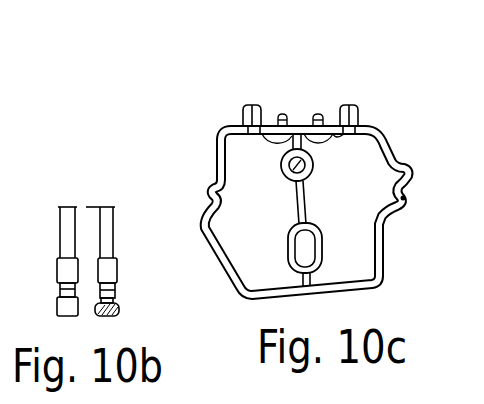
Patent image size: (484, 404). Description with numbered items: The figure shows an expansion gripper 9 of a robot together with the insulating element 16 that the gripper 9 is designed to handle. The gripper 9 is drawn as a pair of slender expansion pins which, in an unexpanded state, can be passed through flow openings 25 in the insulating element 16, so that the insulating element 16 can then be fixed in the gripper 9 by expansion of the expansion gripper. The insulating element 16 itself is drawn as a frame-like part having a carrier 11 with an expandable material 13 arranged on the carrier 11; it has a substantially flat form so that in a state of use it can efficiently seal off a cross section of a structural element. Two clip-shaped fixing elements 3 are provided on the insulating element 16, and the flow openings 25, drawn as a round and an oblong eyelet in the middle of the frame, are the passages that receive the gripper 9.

In FIG. 10B, the gripper 9 is at (96, 184).
In FIG. 10C, the fixing element 3 is at (251, 103).
In FIG. 10C, the insulating element 16 is at (304, 154).
In FIG. 10C, the expandable material 13 is at (233, 148).
In FIG. 10C, the carrier 11 is at (212, 166).
In FIG. 10C, the flow opening 25 is at (300, 168).